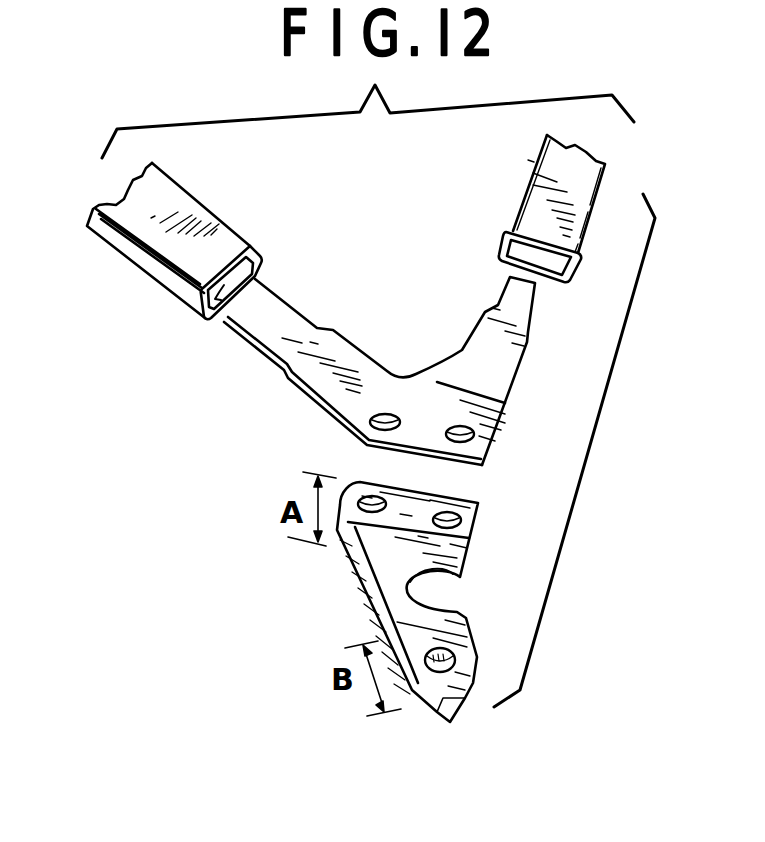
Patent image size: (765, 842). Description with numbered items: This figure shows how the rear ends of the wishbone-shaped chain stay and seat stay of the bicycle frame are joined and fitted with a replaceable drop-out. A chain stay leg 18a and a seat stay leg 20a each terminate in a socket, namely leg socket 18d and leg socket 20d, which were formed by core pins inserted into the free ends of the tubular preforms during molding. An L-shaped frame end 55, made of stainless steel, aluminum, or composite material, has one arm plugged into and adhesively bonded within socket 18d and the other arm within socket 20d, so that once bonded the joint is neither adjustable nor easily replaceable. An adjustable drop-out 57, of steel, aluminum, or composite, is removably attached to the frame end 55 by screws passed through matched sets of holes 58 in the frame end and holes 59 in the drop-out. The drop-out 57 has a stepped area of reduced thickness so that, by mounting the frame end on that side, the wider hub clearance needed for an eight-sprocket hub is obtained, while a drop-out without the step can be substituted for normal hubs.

The chain stay leg 18a is at (550, 162).
The leg socket 18d is at (518, 235).
The seat stay leg 20a is at (147, 258).
The leg socket 20d is at (212, 320).
The L-shaped frame end 55 is at (338, 350).
The adjustable drop-out 57 is at (360, 557).
The holes 58 is at (453, 427).
The holes 59 is at (441, 513).